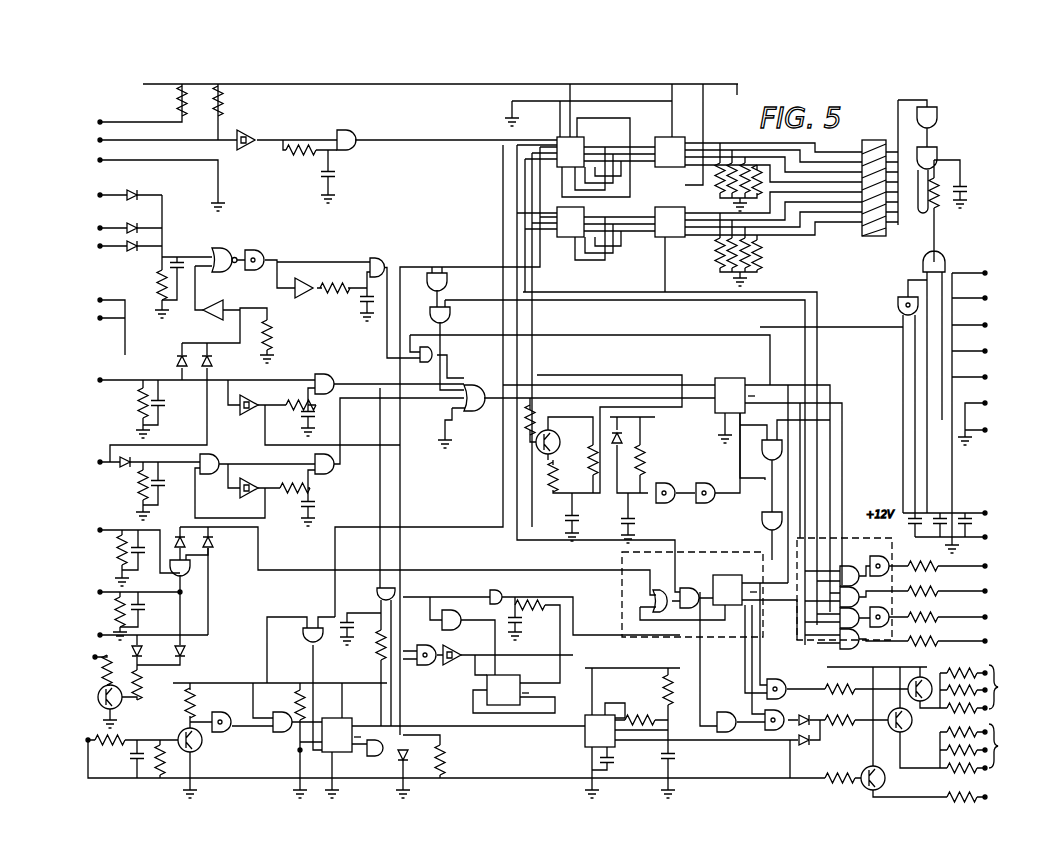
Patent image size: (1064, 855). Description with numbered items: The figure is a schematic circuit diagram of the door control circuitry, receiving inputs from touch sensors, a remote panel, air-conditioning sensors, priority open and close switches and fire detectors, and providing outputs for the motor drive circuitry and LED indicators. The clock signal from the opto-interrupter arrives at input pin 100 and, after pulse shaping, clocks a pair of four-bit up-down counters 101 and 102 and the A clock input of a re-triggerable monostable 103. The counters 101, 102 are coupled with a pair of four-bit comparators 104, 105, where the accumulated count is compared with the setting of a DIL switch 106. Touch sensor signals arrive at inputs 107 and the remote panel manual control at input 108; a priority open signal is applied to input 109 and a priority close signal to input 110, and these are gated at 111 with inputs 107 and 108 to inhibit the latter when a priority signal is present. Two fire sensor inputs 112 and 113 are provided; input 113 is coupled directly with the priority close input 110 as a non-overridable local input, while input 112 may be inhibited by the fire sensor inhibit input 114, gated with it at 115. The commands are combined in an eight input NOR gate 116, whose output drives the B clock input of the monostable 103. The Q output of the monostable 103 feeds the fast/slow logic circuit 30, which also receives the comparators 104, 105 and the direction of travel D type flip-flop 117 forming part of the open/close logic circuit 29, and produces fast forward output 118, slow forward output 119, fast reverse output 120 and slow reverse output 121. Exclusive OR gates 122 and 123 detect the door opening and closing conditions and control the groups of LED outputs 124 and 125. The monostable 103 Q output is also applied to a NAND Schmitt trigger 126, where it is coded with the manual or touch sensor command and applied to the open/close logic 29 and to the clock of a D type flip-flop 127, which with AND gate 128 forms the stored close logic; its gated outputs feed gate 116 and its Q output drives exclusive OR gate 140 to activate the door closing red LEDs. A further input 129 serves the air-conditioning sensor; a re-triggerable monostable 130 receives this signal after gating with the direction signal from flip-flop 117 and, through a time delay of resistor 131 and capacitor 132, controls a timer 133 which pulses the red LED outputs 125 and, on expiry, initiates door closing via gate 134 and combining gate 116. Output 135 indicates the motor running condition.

The open/close logic circuit 29 is at (672, 552).
The fast/slow logic circuit 30 is at (830, 641).
The input pin 100 is at (313, 147).
The 4-bit up-down counter 101 is at (557, 141).
The 4-bit up-down counter 102 is at (557, 211).
The re-triggerable monostable 103 is at (672, 486).
The 4-bit comparator 104 is at (674, 137).
The 4-bit comparator 105 is at (684, 237).
The DIL switch 106 is at (862, 142).
The touch sensor inputs 107 is at (95, 222).
The manual control input 108 is at (117, 195).
The priority open input 109 is at (265, 402).
The priority close input 110 is at (265, 462).
The gate 111 is at (228, 250).
The fire sensor input 112 is at (122, 612).
The fire sensor input 113 is at (135, 638).
The fire sensor inhibit input 114 is at (121, 554).
The gate 115 is at (396, 596).
The eight input NOR gate 116 is at (478, 386).
The D type flip-flop 117 is at (742, 606).
The fast forward output 118 is at (937, 566).
The slow forward output 119 is at (937, 591).
The fast reverse output 120 is at (937, 617).
The slow reverse output 121 is at (937, 641).
The exclusive OR gate 122 is at (790, 685).
The exclusive OR gate 123 is at (770, 729).
The outputs 124 is at (981, 689).
The outputs 125 is at (981, 748).
The NAND Schmitt trigger 126 is at (437, 667).
The D type flip-flop 127 is at (487, 696).
The AND gate 128 is at (494, 591).
The input 129 is at (423, 740).
The flip-flop 130 is at (453, 761).
The resistor 131 is at (282, 712).
The capacitor 132 is at (299, 750).
The timer 133 is at (585, 742).
The gate 134 is at (380, 594).
The output 135 is at (902, 736).
The exclusive OR gate 140 is at (728, 730).